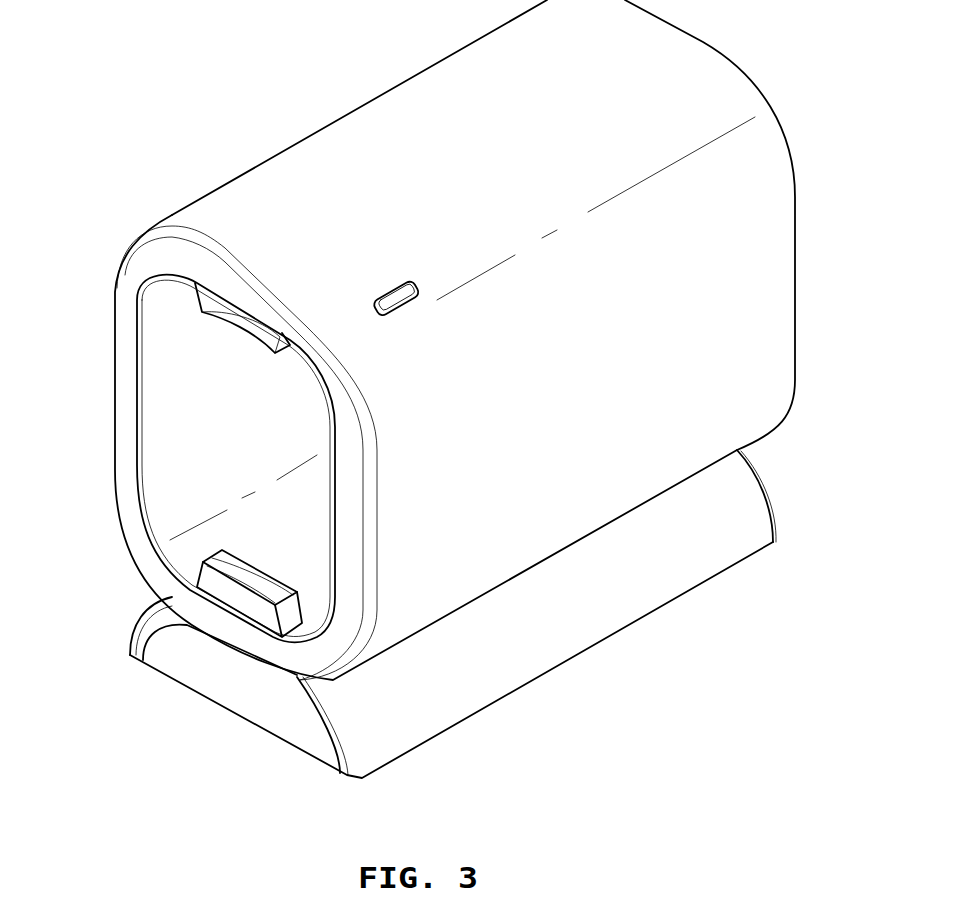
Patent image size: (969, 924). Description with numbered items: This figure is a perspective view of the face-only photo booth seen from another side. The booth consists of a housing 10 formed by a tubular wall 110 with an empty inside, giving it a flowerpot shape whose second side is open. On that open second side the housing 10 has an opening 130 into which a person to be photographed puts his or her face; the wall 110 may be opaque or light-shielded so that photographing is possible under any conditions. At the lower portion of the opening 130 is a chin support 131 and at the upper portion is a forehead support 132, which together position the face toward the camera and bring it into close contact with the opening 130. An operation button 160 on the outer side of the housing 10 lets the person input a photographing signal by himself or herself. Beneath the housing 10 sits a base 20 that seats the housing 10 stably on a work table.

The housing 10 is at (338, 126).
The tubular wall 110 is at (455, 100).
The opening 130 is at (179, 464).
The chin support 131 is at (230, 596).
The forehead support 132 is at (210, 298).
The operation button 160 is at (393, 293).
The base 20 is at (562, 632).